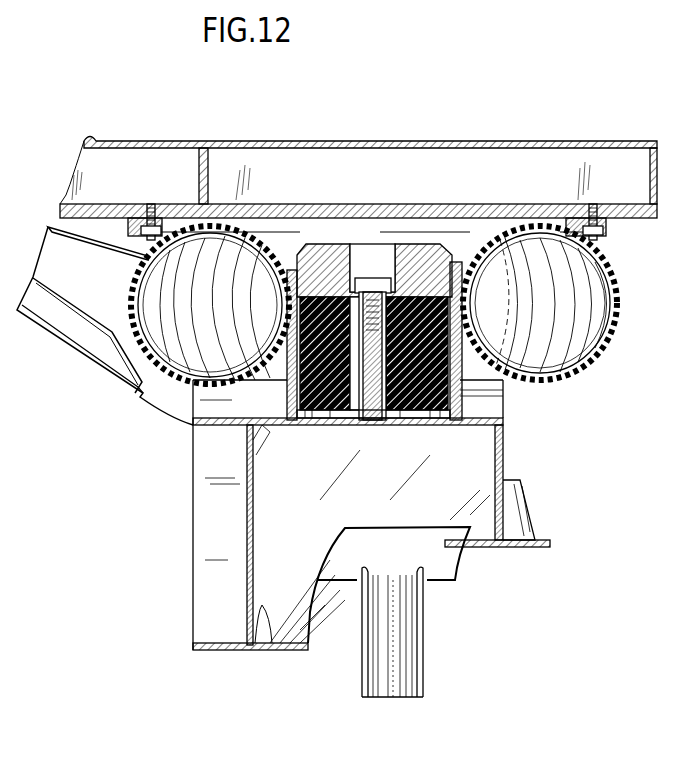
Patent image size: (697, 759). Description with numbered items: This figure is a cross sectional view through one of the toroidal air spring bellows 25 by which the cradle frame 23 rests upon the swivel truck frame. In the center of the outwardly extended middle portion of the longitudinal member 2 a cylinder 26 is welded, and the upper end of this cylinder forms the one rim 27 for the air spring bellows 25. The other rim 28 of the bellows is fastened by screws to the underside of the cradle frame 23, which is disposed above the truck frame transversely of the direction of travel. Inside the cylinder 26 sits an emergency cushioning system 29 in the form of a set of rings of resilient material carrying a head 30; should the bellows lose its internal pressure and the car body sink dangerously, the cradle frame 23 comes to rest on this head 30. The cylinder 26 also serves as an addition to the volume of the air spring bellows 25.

The longitudinal member 2 is at (503, 462).
The cradle frame 23 is at (422, 208).
The air spring bellows 25 is at (618, 320).
The cylinder 26 is at (455, 405).
The rim 27 is at (472, 290).
The rim 28 is at (137, 225).
The emergency cushioning system 29 is at (300, 388).
The head 30 is at (318, 262).